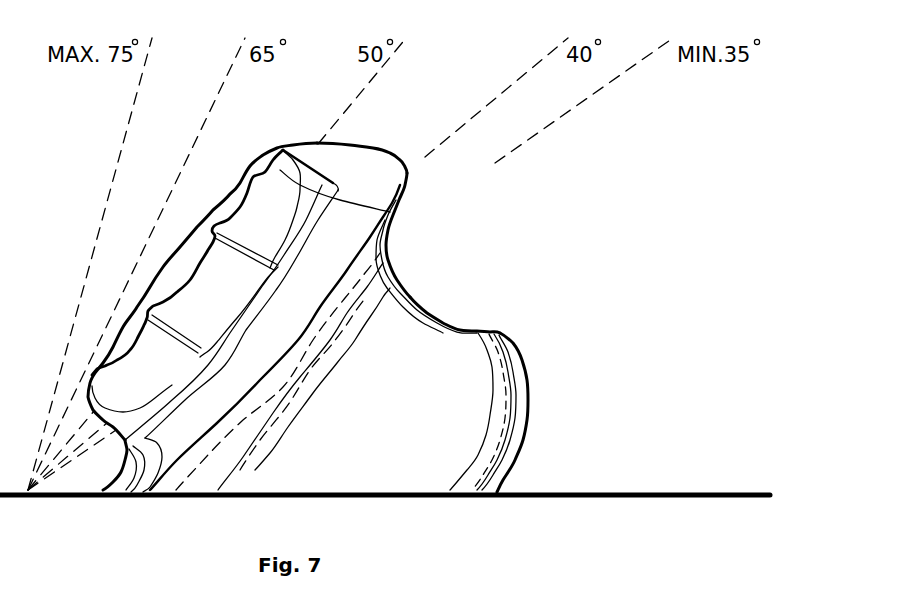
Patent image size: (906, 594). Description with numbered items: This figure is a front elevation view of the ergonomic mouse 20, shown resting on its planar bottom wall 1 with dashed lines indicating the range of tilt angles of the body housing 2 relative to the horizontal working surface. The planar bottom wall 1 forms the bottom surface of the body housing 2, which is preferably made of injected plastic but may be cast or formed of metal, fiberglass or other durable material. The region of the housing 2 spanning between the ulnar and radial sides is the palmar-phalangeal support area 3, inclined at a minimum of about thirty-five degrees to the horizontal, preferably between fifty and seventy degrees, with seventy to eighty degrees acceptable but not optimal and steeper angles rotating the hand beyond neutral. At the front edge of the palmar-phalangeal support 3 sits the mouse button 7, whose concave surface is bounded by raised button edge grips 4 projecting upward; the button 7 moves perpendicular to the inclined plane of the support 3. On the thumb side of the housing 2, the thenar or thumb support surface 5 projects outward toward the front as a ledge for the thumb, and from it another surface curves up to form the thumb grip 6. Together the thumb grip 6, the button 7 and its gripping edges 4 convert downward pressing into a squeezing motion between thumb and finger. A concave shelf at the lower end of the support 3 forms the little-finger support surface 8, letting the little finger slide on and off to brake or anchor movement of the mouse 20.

The planar bottom wall 1 is at (330, 496).
The body housing 2 is at (515, 467).
The palmar-phalangeal support area 3 is at (373, 181).
The raised button edge grip 4 is at (233, 230).
The thenar or thumb support surface 5 is at (462, 326).
The thumb grip 6 is at (393, 240).
The mouse button 7 is at (302, 178).
The little-finger support surface 8 is at (123, 496).
The mouse 20 is at (453, 385).